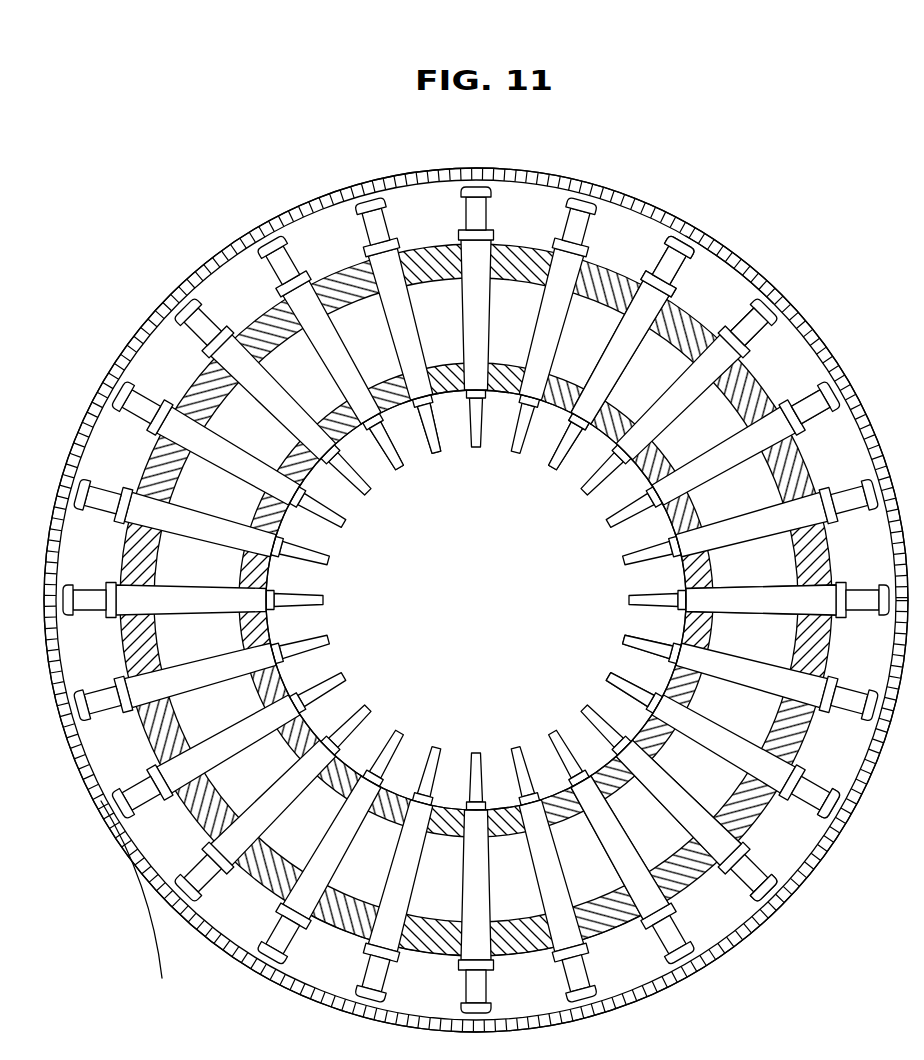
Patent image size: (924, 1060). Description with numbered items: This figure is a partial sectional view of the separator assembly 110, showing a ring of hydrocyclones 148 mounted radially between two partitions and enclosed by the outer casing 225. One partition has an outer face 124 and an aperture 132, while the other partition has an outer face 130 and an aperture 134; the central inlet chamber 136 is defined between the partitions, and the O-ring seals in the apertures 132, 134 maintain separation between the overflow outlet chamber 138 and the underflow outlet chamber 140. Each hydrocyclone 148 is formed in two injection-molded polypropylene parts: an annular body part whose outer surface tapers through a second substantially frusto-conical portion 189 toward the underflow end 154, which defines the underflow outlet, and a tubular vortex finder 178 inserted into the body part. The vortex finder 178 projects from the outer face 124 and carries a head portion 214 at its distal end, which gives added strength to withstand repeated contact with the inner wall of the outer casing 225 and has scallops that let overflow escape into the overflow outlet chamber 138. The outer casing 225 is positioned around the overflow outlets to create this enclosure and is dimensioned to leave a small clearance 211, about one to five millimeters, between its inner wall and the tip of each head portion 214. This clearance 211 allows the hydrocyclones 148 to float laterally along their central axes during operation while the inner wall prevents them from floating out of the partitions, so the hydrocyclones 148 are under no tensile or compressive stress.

The assembly 110 is at (161, 281).
The outer face 124 is at (428, 258).
The outer face 130 is at (555, 425).
The aperture 132 is at (461, 938).
The aperture 134 is at (507, 807).
The central inlet chamber 136 is at (738, 568).
The overflow outlet chamber 138 is at (722, 278).
The outlet chamber 140 is at (431, 611).
The hydrocyclone 148 is at (693, 827).
The underflow end 154 is at (438, 448).
The tubular vortex finder 178 is at (754, 332).
The second substantially frusto-conical portion 189 is at (638, 647).
The clearance 211 is at (100, 800).
The head portion 214 is at (833, 813).
The outer casing 225 is at (267, 226).